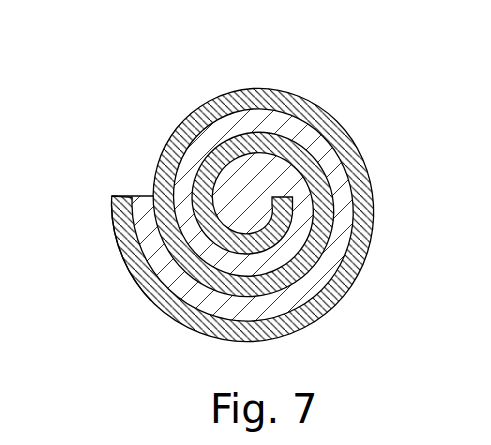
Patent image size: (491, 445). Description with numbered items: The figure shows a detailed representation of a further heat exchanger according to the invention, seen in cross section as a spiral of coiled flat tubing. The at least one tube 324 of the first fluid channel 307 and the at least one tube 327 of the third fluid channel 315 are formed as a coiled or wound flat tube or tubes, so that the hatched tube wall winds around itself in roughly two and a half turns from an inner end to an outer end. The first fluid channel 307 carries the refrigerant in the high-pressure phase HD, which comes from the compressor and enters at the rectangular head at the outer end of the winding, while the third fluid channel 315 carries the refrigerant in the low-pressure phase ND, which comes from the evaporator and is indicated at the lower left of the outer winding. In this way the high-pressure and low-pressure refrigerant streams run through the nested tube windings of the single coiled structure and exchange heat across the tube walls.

The tube 324 is at (262, 102).
The tube 327 is at (360, 153).
The first fluid channel 307 is at (373, 208).
The third fluid channel 315 is at (366, 259).
The high-pressure phase HD is at (147, 196).
The low-pressure phase ND is at (122, 256).